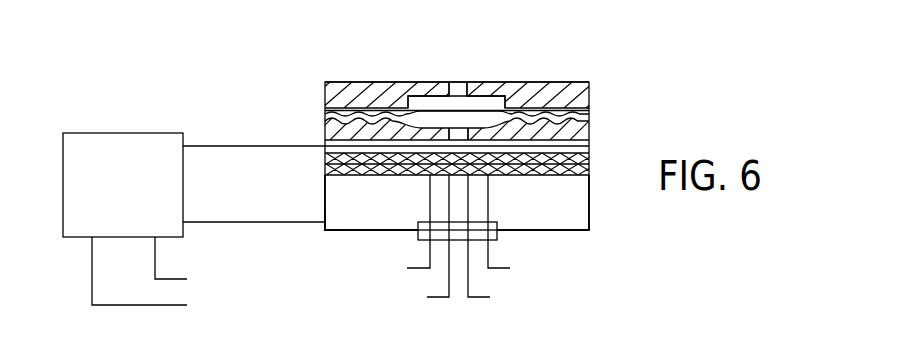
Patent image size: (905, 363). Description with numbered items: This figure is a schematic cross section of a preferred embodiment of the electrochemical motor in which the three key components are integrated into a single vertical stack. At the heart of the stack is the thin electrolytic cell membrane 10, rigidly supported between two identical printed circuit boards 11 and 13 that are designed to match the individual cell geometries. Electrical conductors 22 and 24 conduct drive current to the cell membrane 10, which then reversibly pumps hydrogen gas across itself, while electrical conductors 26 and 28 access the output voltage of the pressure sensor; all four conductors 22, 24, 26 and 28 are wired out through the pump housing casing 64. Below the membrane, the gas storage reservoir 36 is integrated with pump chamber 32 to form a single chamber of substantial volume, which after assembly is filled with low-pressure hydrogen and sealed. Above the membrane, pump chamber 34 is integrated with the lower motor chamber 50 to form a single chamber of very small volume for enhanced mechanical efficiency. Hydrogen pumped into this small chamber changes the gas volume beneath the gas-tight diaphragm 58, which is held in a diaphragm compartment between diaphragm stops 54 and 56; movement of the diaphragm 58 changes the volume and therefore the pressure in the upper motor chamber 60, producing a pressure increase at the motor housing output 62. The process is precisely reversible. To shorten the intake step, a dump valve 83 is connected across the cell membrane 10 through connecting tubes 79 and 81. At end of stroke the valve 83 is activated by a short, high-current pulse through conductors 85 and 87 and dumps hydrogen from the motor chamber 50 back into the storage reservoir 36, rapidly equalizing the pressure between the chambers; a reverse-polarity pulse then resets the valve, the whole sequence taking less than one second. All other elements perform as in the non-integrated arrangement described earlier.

The cell membrane 10 is at (590, 160).
The printed circuit board 11 is at (590, 157).
The printed circuit board 13 is at (589, 172).
The electrical conductor 22 is at (497, 242).
The electrical conductor 24 is at (518, 228).
The electrical conductor 26 is at (421, 242).
The electrical conductor 28 is at (401, 228).
The pump chamber 32 is at (575, 198).
The gas storage reservoir 36 is at (575, 198).
The pump chamber 34 is at (457, 138).
The lower motor chamber 50 is at (457, 138).
The diaphragm stop 54 is at (333, 134).
The diaphragm stop 56 is at (368, 93).
The diaphragm 58 is at (428, 110).
The upper motor chamber 60 is at (488, 102).
The motor housing output 62 is at (457, 90).
The pump housing casing 64 is at (324, 231).
The connecting tube 79 is at (232, 145).
The connecting tube 81 is at (232, 223).
The dump valve 83 is at (155, 133).
The conductor 85 is at (188, 265).
The conductor 87 is at (157, 277).